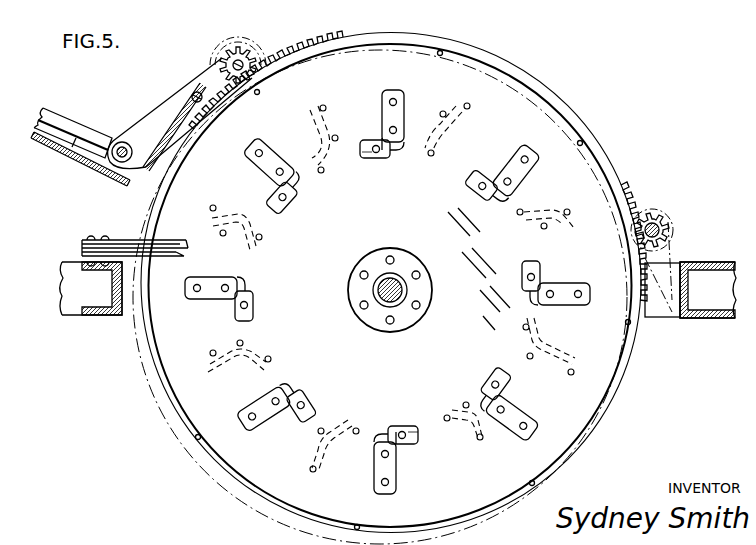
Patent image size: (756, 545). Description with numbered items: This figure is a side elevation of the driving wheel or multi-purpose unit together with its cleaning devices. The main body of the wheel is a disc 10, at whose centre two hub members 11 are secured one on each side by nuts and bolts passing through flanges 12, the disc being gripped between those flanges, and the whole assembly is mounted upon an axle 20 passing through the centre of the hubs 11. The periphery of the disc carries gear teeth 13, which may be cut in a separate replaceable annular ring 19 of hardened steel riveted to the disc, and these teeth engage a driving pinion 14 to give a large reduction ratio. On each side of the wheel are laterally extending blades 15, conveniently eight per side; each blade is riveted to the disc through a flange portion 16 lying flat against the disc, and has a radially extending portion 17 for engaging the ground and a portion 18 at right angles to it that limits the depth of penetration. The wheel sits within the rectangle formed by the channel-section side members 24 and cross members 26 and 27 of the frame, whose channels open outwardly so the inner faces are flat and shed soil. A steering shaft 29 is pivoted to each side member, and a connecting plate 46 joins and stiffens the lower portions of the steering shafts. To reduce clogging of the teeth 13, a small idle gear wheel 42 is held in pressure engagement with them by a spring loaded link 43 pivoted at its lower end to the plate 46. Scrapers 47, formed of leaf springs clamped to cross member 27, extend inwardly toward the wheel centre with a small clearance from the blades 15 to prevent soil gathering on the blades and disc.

The disc 10 is at (512, 96).
The hub members 11 is at (410, 290).
The flanges 12 is at (393, 258).
The gear teeth 13 is at (298, 58).
The driving pinion 14 is at (662, 215).
The blades 15 is at (405, 120).
The flange portions 16 is at (380, 160).
The radially extending portion 17 is at (385, 102).
The right-angle portion 18 is at (380, 138).
The annular ring 19 is at (298, 66).
The axle 20 is at (397, 300).
The side members 24 is at (712, 262).
The cross member 26 is at (668, 318).
The cross member 27 is at (123, 316).
The steering shaft 29 is at (62, 108).
The idle gear wheel 42 is at (215, 54).
The spring loaded link 43 is at (148, 124).
The connecting plate 46 is at (88, 136).
The scrapers 47 is at (158, 254).